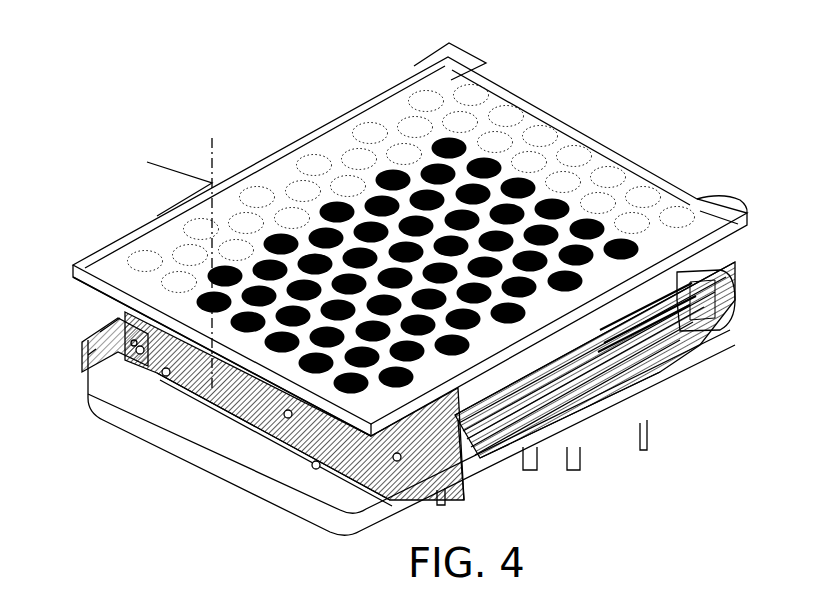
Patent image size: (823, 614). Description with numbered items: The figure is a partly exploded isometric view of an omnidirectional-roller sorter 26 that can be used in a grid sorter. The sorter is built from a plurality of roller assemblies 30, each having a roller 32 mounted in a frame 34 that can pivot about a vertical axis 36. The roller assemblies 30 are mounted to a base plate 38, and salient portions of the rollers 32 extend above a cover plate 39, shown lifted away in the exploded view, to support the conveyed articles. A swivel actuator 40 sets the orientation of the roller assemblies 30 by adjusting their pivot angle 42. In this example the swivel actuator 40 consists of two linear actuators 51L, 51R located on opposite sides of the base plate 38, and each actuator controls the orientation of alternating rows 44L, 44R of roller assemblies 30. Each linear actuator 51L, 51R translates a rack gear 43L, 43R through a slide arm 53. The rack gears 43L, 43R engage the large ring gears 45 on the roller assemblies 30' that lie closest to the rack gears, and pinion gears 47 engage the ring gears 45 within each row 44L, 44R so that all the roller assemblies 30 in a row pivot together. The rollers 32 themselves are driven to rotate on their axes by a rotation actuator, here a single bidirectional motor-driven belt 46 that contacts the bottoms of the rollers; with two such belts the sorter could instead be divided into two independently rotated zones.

The omnidirectional-roller sorter 26 is at (659, 91).
The cover plate 39 is at (424, 76).
The linear actuator 51L is at (237, 237).
The vertical axis 36 is at (212, 152).
The pivot angle 42 is at (187, 183).
The roller 32 is at (148, 342).
The rack gear 43L is at (130, 341).
The roller assemblies closest to the rack gears 30' is at (280, 424).
The row of roller assemblies 44L is at (138, 355).
The ring gear 45 is at (164, 376).
The roller assembly 30 is at (294, 409).
The frame 34 is at (285, 418).
The base plate 38 is at (312, 468).
The pinion gear 47 is at (362, 453).
The row of roller assemblies 44R is at (397, 462).
The slide arm 53 is at (524, 466).
The linear actuator 51R is at (562, 456).
The swivel actuator 40 is at (618, 421).
The rack gear 43R is at (644, 336).
The bidirectional motor-driven belt 46 is at (720, 320).